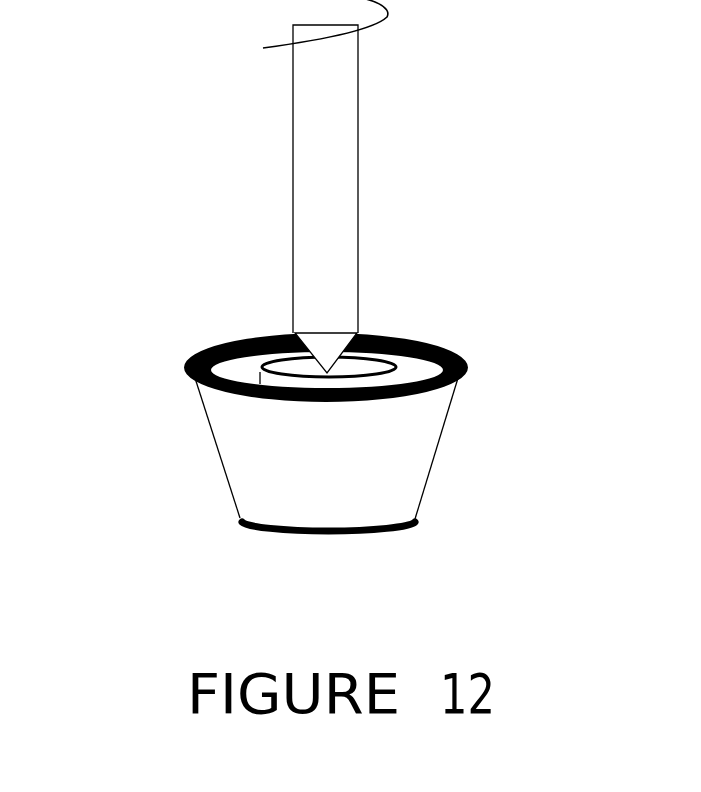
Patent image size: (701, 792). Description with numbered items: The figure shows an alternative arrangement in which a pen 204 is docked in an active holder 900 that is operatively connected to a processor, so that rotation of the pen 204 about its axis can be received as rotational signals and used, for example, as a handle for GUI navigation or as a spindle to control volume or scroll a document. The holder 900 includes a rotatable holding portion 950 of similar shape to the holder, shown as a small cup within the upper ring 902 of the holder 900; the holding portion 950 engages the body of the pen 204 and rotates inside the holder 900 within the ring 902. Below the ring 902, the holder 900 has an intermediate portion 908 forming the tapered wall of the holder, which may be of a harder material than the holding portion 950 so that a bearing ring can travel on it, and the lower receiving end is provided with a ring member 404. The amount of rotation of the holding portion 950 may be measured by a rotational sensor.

The pen 204 is at (358, 85).
The holder 900 is at (306, 360).
The ring 902 is at (435, 342).
The rotatable holding portion 950 is at (397, 384).
The intermediate portion 908 is at (435, 423).
The ring member 404 is at (242, 517).